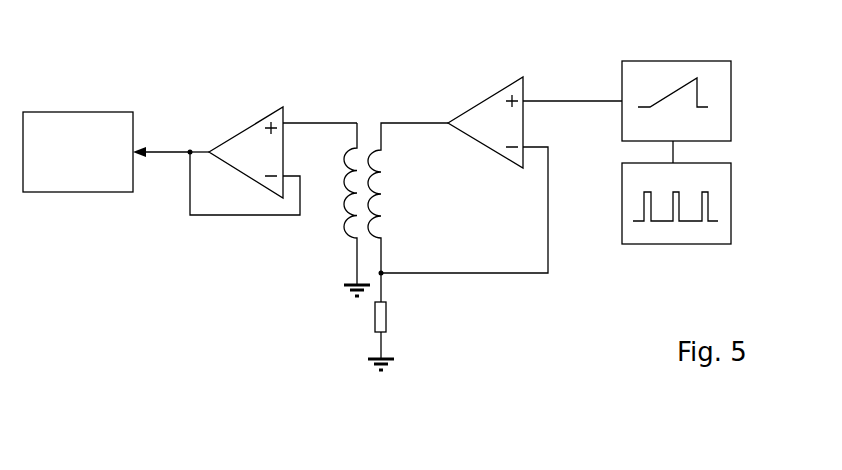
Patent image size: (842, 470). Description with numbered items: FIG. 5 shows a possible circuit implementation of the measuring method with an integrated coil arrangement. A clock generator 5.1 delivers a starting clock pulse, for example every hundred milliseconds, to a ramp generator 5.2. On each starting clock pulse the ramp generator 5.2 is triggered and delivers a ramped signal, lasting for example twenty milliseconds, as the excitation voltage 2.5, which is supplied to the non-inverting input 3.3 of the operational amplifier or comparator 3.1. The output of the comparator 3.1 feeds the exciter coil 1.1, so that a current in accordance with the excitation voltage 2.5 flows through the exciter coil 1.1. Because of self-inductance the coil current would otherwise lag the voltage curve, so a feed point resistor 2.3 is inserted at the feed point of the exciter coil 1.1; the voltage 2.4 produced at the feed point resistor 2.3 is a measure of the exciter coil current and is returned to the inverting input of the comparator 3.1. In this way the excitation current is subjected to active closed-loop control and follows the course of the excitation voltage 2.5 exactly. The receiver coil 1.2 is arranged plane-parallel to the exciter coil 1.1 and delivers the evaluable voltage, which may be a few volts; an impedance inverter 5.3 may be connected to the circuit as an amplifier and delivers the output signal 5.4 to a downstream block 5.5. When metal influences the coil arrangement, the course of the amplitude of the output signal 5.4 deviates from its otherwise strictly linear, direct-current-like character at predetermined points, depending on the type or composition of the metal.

The exciter coil 1.1 is at (386, 192).
The receiver coil 1.2 is at (347, 241).
The feed point resistor 2.3 is at (386, 313).
The voltage 2.4 is at (425, 268).
The excitation voltage 2.5 is at (603, 98).
The operational amplifier (comparator) 3.1 is at (482, 115).
The non-inverting input 3.3 is at (533, 93).
The clock generator 5.1 is at (645, 233).
The ramp generator 5.2 is at (650, 72).
The impedance inverter 5.3 is at (237, 148).
The output signal 5.4 is at (162, 148).
The evaluation unit 5.5 is at (102, 176).